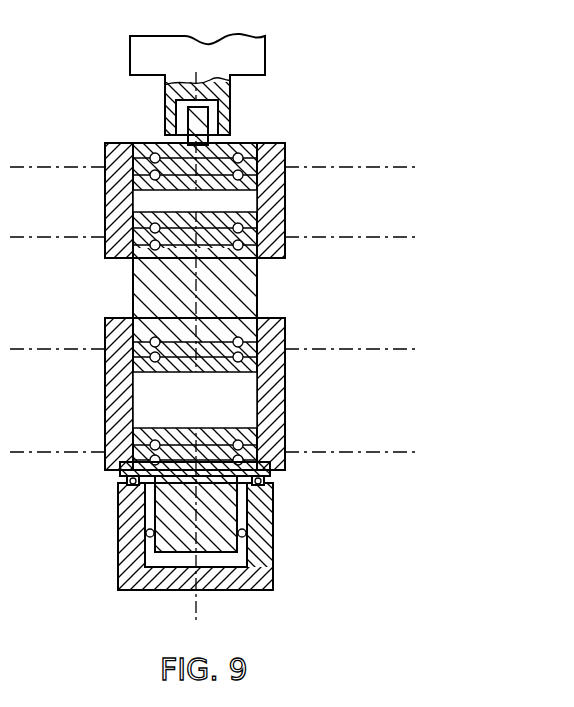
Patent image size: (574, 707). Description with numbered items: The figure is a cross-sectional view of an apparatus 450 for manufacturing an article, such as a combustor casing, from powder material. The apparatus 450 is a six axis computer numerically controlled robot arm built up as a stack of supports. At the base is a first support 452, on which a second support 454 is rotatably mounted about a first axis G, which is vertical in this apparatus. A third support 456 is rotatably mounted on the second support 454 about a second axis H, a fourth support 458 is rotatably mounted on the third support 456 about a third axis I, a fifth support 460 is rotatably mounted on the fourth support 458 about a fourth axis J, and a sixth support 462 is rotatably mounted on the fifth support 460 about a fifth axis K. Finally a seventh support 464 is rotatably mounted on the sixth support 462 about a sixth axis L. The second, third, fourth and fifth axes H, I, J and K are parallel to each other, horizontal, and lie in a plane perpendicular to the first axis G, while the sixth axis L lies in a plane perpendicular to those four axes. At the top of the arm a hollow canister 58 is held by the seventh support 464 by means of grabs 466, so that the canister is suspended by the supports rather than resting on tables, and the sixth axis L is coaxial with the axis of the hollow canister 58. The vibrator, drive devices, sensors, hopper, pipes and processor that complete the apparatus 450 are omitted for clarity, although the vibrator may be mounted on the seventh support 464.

The hollow canister 58 is at (263, 68).
The apparatus 450 is at (363, 277).
The first support 452 is at (266, 535).
The second support 454 is at (229, 493).
The third support 456 is at (283, 430).
The fourth support 458 is at (250, 296).
The fifth support 460 is at (282, 197).
The sixth support 462 is at (148, 182).
The seventh support 464 is at (163, 97).
The grabs 466 is at (215, 58).
The first axis G is at (197, 608).
The second axis H is at (410, 452).
The third axis I is at (410, 348).
The fourth axis J is at (412, 237).
The fifth axis K is at (408, 167).
The sixth axis L is at (229, 108).